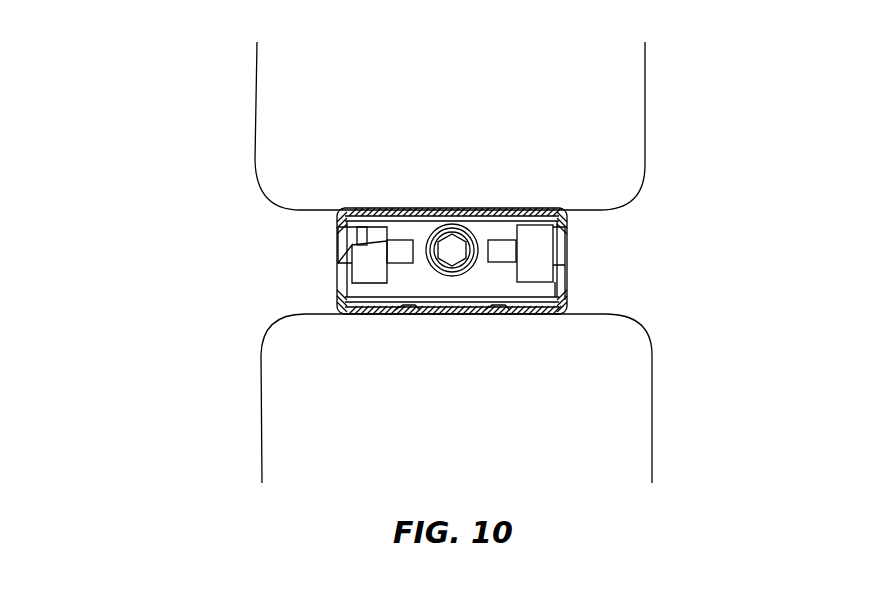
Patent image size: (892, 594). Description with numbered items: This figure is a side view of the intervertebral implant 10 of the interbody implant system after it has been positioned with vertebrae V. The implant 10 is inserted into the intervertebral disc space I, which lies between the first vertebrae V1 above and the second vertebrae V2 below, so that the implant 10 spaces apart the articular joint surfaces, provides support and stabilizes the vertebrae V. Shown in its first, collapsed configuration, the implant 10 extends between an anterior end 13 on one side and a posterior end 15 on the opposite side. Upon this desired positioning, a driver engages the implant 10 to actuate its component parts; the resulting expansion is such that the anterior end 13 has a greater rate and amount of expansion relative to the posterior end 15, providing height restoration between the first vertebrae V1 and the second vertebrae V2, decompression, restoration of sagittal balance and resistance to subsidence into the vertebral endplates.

The intervertebral implant 10 is at (610, 237).
The anterior end 13 is at (567, 278).
The posterior end 15 is at (335, 240).
The intervertebral disc space I is at (292, 295).
The vertebrae V is at (182, 162).
The first vertebrae V1 is at (285, 97).
The second vertebrae V2 is at (303, 397).